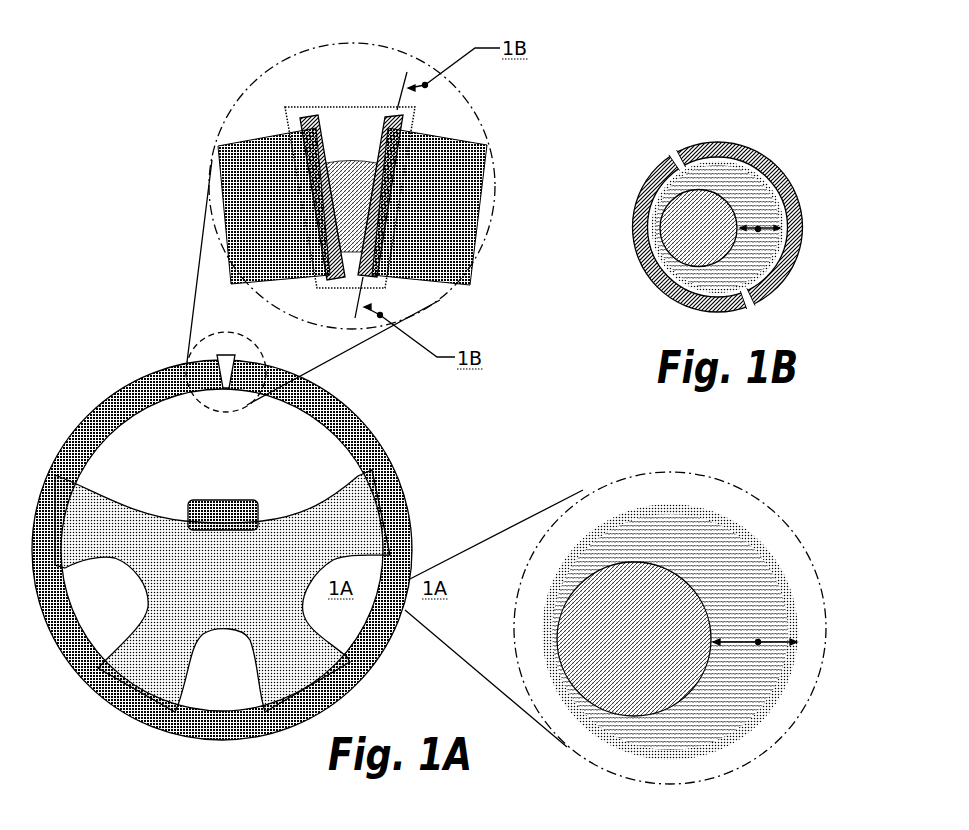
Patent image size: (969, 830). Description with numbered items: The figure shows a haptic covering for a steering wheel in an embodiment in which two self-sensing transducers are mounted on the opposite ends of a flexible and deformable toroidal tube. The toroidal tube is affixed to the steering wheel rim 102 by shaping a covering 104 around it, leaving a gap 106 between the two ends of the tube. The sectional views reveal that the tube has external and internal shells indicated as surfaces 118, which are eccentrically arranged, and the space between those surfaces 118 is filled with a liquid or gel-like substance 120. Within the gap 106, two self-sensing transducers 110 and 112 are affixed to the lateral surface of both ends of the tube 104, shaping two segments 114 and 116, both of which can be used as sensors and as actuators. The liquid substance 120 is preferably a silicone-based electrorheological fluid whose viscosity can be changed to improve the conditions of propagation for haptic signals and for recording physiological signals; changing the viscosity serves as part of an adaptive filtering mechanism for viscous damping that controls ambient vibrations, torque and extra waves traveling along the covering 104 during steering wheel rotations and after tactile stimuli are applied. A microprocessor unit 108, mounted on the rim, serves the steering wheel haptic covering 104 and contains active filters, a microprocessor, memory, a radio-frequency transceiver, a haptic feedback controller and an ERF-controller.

In FIG. 1A, the steering wheel rim 102 is at (132, 662).
In FIG. 1B, the steering wheel rim 102 is at (673, 232).
In FIG. 1A, the covering 104 is at (388, 502).
In FIG. 1B, the covering 104 is at (787, 250).
In FIG. 1A, the gap 106 is at (225, 368).
In FIG. 1A, the microprocessor unit 108 is at (234, 510).
In FIG. 1A, the self-sensing transducer 110 is at (313, 138).
In FIG. 1A, the self-sensing transducer 112 is at (388, 135).
In FIG. 1B, the segment 114 is at (657, 177).
In FIG. 1B, the segment 116 is at (775, 172).
In FIG. 1A, the surfaces 118 is at (793, 615).
In FIG. 1B, the surfaces 118 is at (758, 229).
In FIG. 1A, the liquid or gel-like substance 120 is at (752, 575).
In FIG. 1B, the liquid or gel-like substance 120 is at (772, 282).